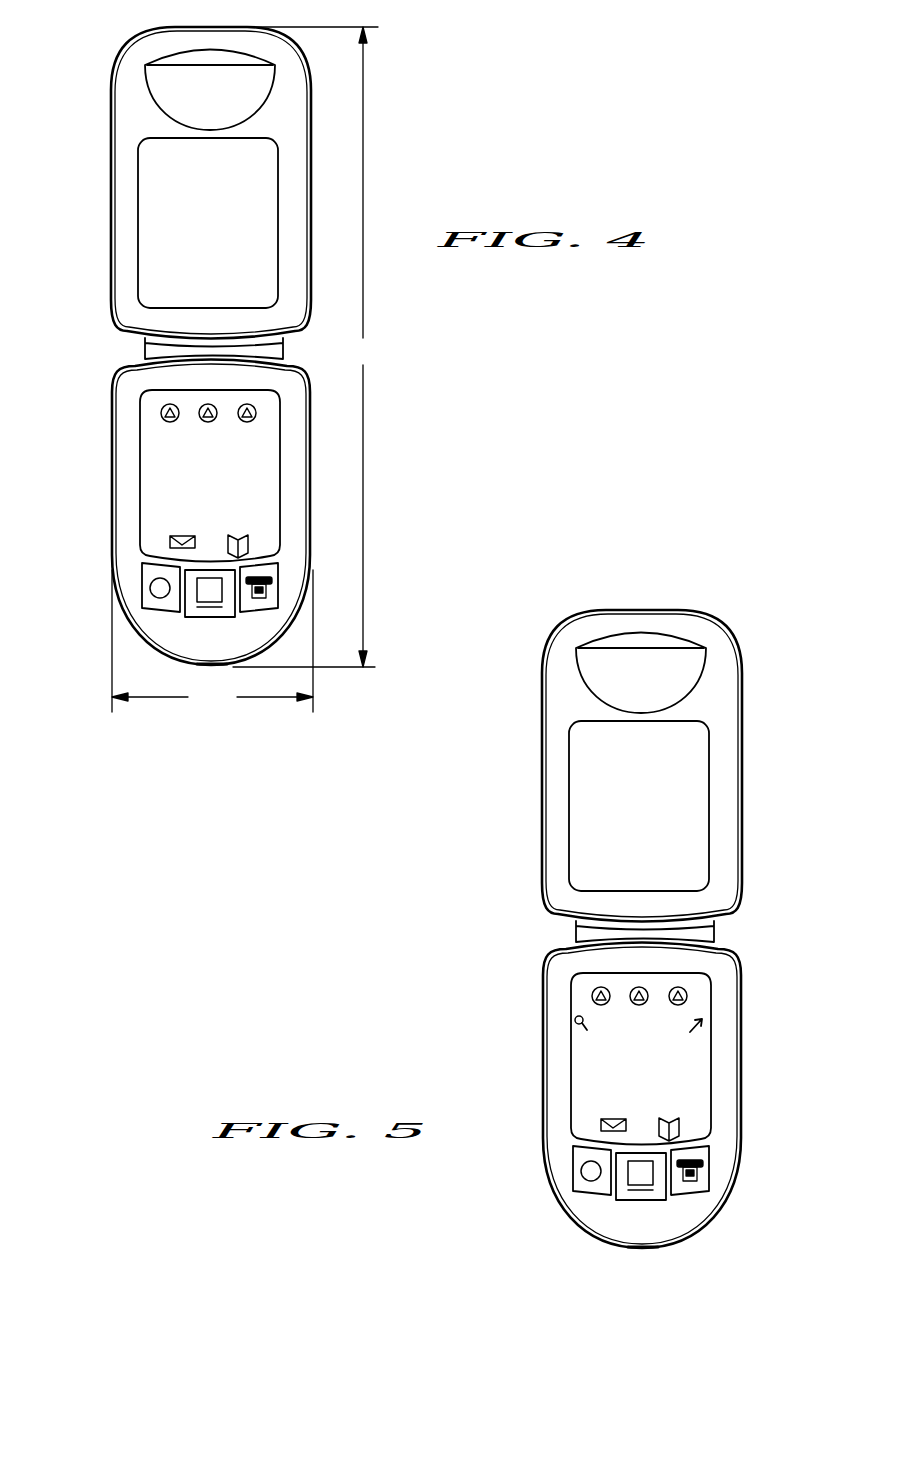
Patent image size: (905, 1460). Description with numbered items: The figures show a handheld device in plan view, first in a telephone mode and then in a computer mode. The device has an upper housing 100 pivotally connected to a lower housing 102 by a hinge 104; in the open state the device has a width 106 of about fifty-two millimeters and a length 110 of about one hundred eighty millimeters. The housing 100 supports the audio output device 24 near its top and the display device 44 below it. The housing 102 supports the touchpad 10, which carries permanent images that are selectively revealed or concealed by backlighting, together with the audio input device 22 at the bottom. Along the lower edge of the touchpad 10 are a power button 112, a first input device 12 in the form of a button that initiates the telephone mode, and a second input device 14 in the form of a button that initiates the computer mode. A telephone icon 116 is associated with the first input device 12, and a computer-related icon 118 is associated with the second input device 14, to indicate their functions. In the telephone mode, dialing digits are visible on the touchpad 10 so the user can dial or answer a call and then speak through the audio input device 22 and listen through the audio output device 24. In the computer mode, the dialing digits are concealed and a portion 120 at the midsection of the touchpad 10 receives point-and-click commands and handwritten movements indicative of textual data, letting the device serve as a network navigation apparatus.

In FIG. 4, the touchpad 10 is at (140, 515).
In FIG. 5, the touchpad 10 is at (601, 1059).
In FIG. 4, the first input device 12 is at (280, 582).
In FIG. 5, the first input device 12 is at (760, 1152).
In FIG. 4, the second input device 14 is at (198, 617).
In FIG. 5, the second input device 14 is at (583, 1205).
In FIG. 4, the audio input device 22 is at (236, 668).
In FIG. 5, the audio input device 22 is at (668, 1292).
In FIG. 4, the audio output device 24 is at (173, 48).
In FIG. 5, the audio output device 24 is at (625, 646).
In FIG. 4, the display device 44 is at (138, 187).
In FIG. 5, the display device 44 is at (595, 806).
In FIG. 4, the housing 100 is at (112, 97).
In FIG. 5, the housing 100 is at (606, 766).
In FIG. 4, the housing 102 is at (113, 378).
In FIG. 5, the housing 102 is at (609, 1096).
In FIG. 4, the hinge 104 is at (145, 350).
In FIG. 5, the hinge 104 is at (595, 918).
In FIG. 4, the width 106 is at (212, 641).
In FIG. 4, the length 110 is at (309, 347).
In FIG. 4, the power button 112 is at (141, 574).
In FIG. 5, the power button 112 is at (544, 1170).
In FIG. 4, the telephone icon 116 is at (265, 607).
In FIG. 5, the computer-related icon 118 is at (744, 1183).
In FIG. 5, the portion 120 is at (692, 1046).